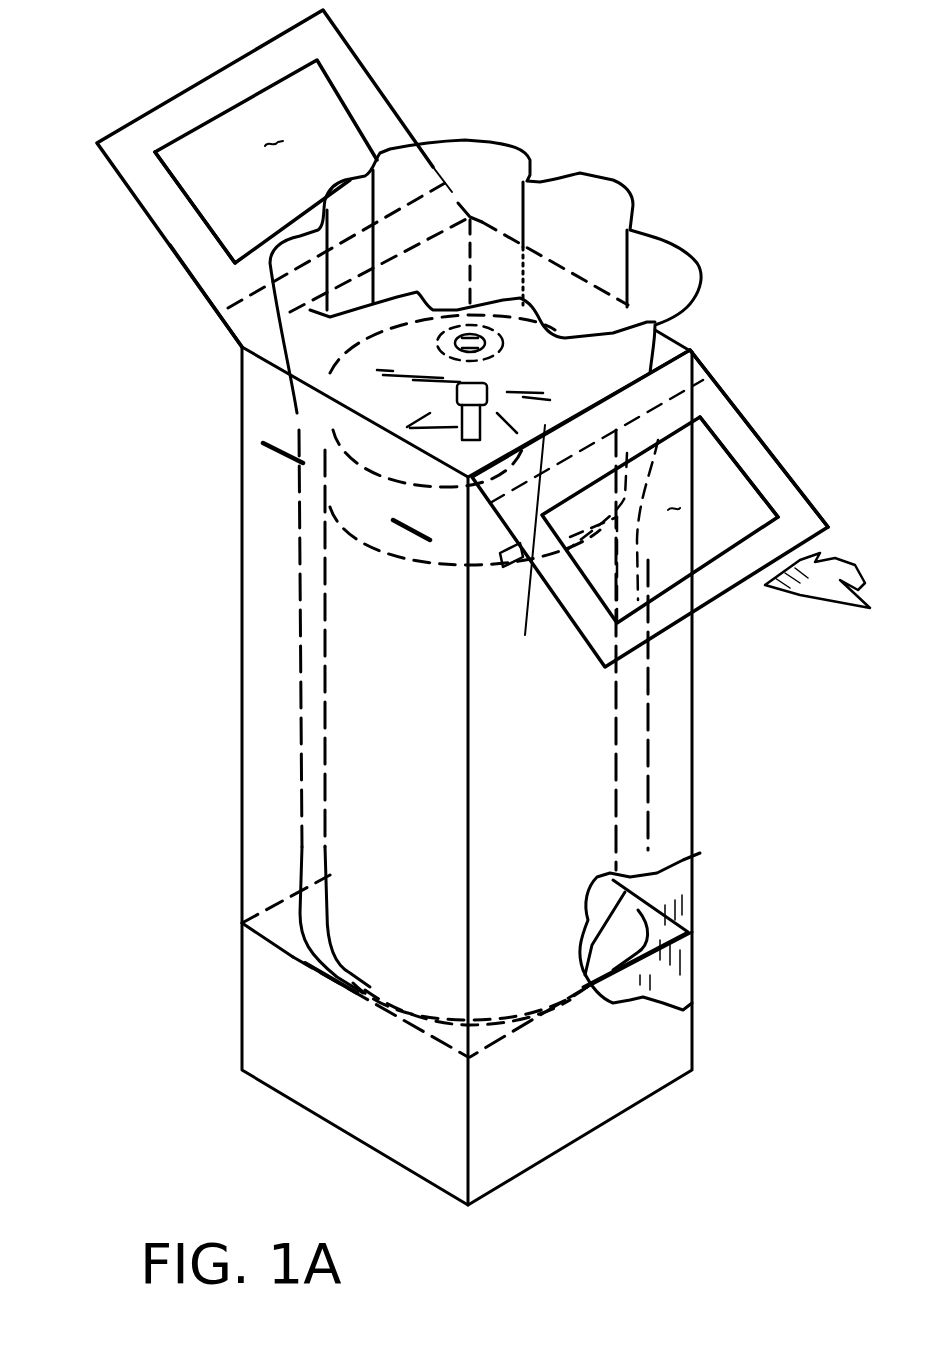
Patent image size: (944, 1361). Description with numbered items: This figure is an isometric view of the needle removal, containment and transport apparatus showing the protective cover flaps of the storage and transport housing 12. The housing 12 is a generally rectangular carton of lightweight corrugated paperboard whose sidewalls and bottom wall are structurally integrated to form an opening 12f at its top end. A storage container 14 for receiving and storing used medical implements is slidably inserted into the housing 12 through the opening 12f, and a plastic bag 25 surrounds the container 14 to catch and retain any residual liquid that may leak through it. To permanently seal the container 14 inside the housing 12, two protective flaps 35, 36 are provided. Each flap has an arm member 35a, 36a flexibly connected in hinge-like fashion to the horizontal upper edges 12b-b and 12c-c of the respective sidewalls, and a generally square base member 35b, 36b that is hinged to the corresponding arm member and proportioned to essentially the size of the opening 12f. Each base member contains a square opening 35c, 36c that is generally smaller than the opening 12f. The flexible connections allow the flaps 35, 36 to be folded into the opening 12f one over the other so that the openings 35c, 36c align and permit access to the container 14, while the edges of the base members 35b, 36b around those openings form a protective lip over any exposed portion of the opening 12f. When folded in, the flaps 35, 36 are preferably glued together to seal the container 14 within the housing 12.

The storage and transport housing 12 is at (240, 665).
The opening 12f is at (273, 343).
The horizontal upper edge of sidewall 12c-c is at (431, 237).
The horizontal upper edge of sidewall 12b-b is at (522, 548).
The storage container 14 is at (348, 765).
The plastic bag 25 is at (580, 197).
The protective flap 36 is at (143, 215).
The arm member 36a is at (242, 322).
The base member 36b is at (193, 247).
The square opening 36c is at (272, 143).
The protective flap 35 is at (790, 470).
The arm member 35a is at (688, 365).
The base member 35b is at (727, 415).
The square opening 35c is at (675, 512).